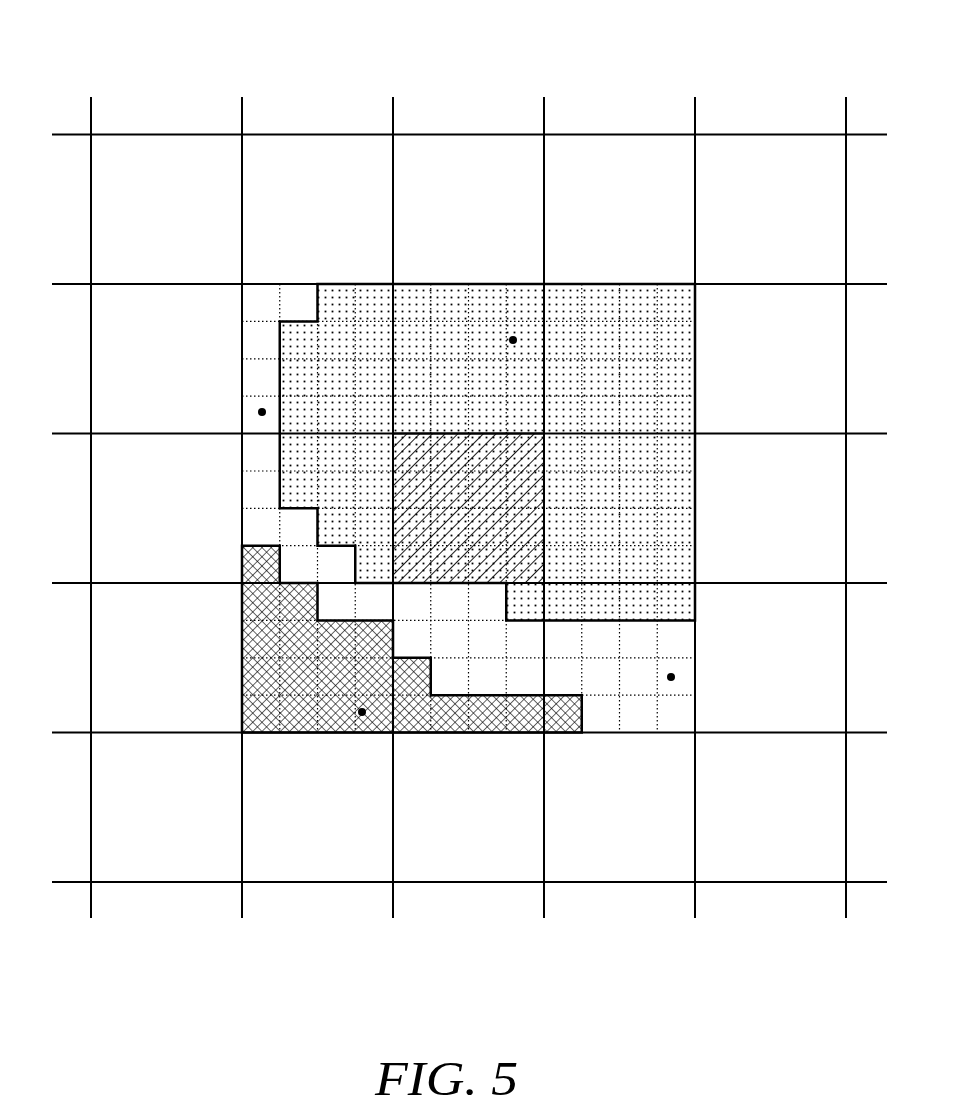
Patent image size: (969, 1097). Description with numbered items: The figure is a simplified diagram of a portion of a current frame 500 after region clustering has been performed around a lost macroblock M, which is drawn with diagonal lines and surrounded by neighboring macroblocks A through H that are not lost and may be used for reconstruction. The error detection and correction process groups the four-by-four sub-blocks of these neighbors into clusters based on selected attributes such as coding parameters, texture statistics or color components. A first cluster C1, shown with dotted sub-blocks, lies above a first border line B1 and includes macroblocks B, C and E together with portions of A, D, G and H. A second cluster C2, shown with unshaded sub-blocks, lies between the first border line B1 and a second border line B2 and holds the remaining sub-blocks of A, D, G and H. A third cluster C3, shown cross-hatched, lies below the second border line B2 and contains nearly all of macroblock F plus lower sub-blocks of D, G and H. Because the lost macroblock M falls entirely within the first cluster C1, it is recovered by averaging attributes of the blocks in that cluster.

The current frame 500 is at (118, 73).
The first border line B1 is at (321, 283).
The second border line B2 is at (243, 544).
The first cluster C1 is at (513, 340).
The second cluster C2 is at (262, 411).
The third cluster C3 is at (362, 712).